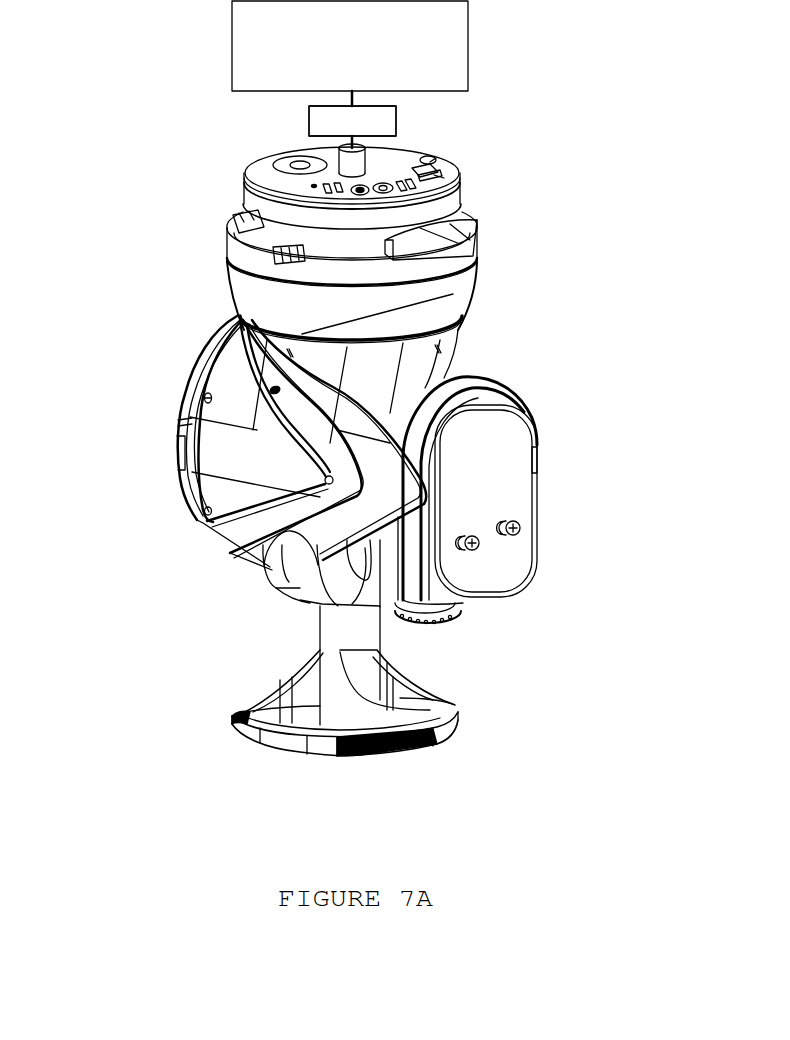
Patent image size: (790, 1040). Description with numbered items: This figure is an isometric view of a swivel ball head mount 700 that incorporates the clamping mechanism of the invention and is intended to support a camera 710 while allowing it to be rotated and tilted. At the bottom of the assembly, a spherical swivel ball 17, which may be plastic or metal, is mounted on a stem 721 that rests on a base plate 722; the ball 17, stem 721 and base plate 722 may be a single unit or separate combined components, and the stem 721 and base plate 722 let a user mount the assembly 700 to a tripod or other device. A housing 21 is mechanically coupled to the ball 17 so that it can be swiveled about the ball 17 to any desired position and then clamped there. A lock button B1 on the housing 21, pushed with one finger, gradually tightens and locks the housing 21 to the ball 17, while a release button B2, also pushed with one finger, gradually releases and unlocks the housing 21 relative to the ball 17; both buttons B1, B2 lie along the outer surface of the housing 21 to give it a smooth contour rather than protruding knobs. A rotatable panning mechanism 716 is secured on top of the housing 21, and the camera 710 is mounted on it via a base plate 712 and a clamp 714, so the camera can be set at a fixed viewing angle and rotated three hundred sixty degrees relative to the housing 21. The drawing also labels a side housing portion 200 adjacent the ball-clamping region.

The camera 710 is at (442, 58).
The base plate 712 is at (397, 130).
The clamp 714 is at (520, 114).
The panning mechanism 716 is at (410, 310).
The swivel ball head mount 700 is at (590, 378).
The control housing 200 is at (500, 487).
The lock button B1 is at (178, 376).
The release button B2 is at (180, 442).
The housing 21 is at (226, 505).
The spherical swivel ball 17 is at (305, 593).
The stem 721 is at (331, 626).
The base plate 722 is at (253, 728).